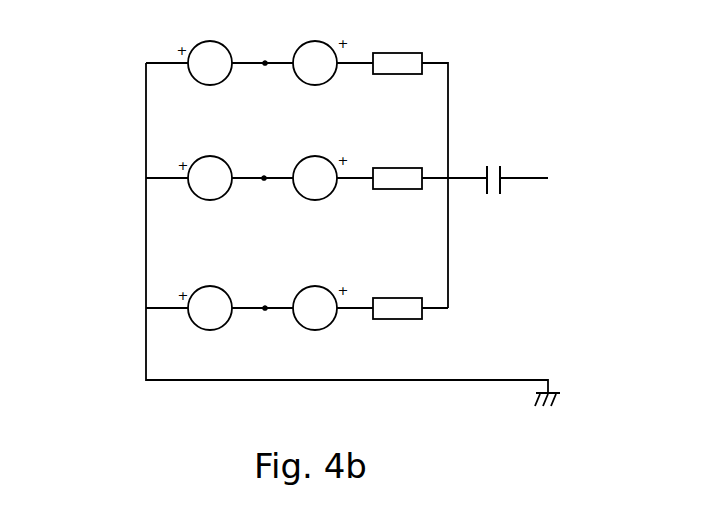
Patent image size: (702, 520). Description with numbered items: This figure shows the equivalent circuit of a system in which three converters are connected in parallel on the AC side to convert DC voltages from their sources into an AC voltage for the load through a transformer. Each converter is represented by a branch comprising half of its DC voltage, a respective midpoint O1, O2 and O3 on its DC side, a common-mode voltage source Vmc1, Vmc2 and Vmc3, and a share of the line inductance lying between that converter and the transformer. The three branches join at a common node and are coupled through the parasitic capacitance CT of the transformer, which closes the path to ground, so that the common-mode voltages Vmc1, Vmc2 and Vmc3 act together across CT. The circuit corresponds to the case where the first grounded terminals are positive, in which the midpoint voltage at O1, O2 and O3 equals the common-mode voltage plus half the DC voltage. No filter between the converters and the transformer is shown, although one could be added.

The common-mode voltage of first converter Vmc1 is at (315, 50).
The common-mode voltage of second converter Vmc2 is at (315, 165).
The common-mode voltage of third converter Vmc3 is at (315, 295).
The midpoint of first inverter O1 is at (265, 62).
The midpoint of second inverter O2 is at (264, 181).
The midpoint of third inverter O3 is at (265, 310).
The parasitic capacitance of the transformer CT is at (500, 172).